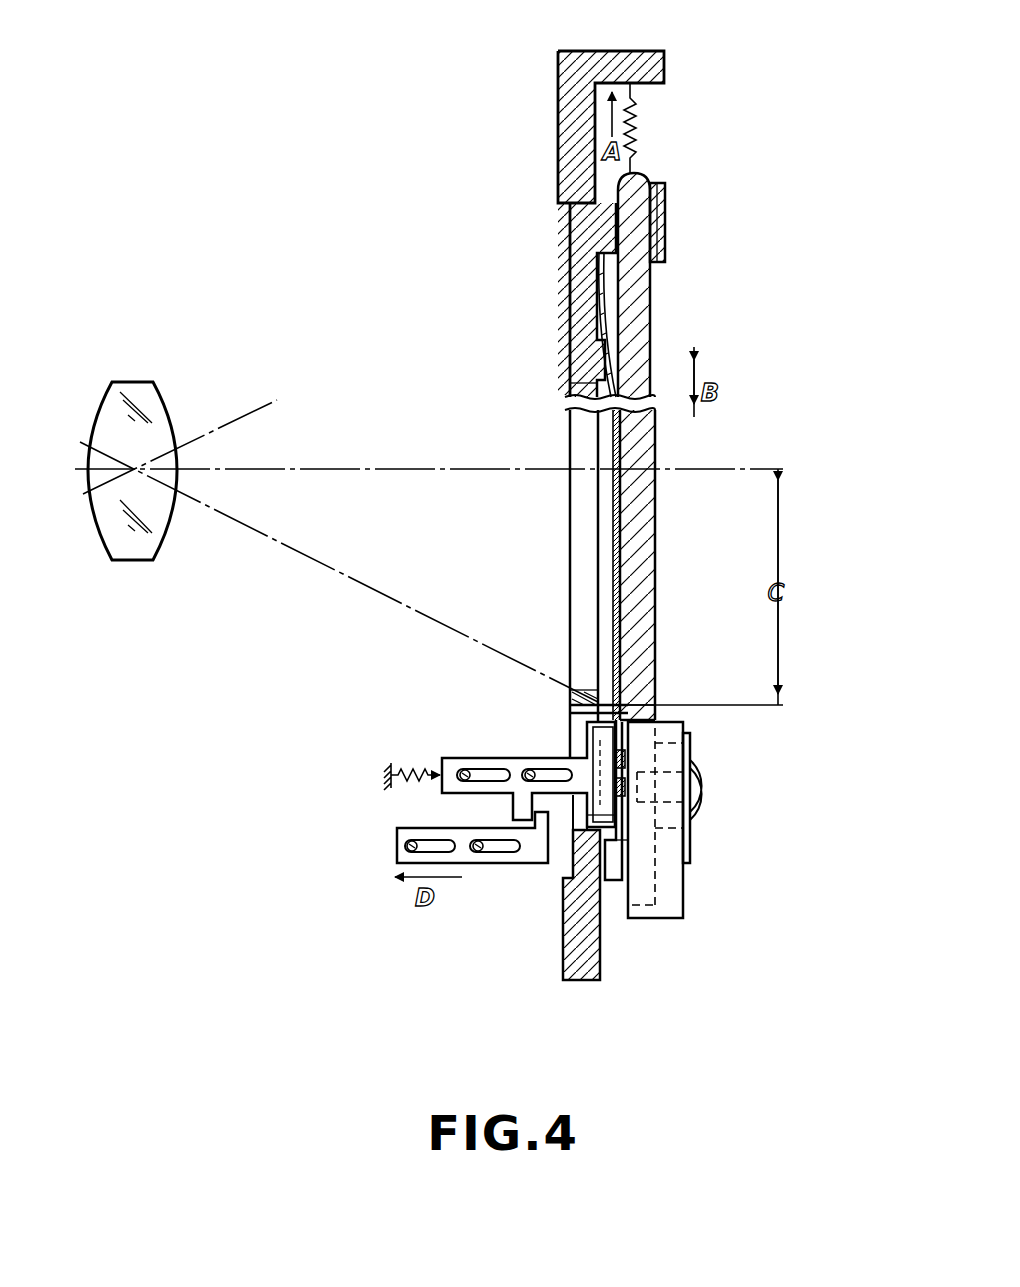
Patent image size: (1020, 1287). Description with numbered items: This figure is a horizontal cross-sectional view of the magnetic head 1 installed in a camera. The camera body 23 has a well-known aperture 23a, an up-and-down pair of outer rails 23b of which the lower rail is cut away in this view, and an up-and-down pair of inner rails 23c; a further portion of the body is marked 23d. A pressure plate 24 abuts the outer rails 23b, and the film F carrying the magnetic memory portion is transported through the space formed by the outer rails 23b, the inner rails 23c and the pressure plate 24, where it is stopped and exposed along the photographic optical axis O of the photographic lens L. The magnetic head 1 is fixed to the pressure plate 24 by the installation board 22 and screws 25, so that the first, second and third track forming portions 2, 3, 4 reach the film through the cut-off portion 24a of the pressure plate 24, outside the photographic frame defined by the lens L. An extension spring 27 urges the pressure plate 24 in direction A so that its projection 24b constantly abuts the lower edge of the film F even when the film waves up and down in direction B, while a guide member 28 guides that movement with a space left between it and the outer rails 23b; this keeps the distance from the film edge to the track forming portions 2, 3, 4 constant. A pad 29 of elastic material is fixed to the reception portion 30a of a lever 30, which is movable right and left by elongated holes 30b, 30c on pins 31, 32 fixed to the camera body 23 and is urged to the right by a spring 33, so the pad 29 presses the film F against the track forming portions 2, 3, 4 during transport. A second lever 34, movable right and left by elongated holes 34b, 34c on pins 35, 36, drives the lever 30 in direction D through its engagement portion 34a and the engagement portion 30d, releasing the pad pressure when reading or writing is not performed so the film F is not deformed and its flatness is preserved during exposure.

The magnetic head 1 is at (700, 898).
The first track forming portion 2 is at (630, 745).
The second track forming portion 3 is at (628, 790).
The third track forming portion 4 is at (628, 795).
The installation board 22 is at (690, 850).
The camera body 23 is at (578, 122).
The aperture 23a is at (580, 523).
The outer rails 23b is at (600, 216).
The inner rails 23c is at (585, 358).
The chamfer portion 23d is at (590, 712).
The pressure plate 24 is at (640, 535).
The cut-off portion 24a is at (637, 705).
The projection 24b is at (612, 862).
The screw 25 is at (702, 808).
The extension spring 27 is at (645, 130).
The guide member 28 is at (665, 213).
The pad 29 is at (620, 817).
The lever 30 is at (475, 760).
The reception portion 30a is at (585, 818).
The elongated hole 30b is at (548, 769).
The elongated hole 30c is at (490, 769).
The engagement portion 30d is at (520, 805).
The pin 31 is at (527, 770).
The pin 32 is at (463, 770).
The spring 33 is at (405, 772).
The lever 34 is at (397, 848).
The engagement portion 34a is at (543, 817).
The elongated hole 34b is at (495, 862).
The elongated hole 34c is at (428, 844).
The pin 35 is at (478, 860).
The pin 36 is at (397, 862).
The photographic lens L is at (152, 392).
The optical axis O is at (390, 465).
The film F is at (620, 620).